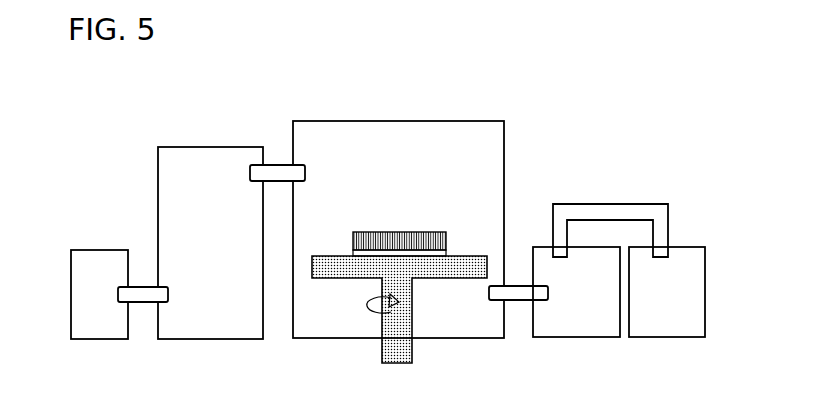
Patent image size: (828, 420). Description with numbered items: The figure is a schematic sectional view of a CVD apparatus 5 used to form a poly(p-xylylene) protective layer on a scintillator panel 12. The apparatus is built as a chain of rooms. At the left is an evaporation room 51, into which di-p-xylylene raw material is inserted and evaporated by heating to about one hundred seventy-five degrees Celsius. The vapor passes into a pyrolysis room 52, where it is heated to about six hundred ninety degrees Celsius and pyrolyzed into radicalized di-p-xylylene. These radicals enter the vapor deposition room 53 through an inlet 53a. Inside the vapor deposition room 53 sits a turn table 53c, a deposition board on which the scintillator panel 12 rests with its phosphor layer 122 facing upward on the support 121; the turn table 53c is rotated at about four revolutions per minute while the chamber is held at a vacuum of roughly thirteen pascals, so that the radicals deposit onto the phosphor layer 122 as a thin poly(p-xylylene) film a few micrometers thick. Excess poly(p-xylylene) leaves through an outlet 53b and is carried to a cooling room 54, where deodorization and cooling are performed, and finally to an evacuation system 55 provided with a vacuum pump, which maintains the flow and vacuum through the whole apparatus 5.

The CVD apparatus 5 is at (401, 63).
The scintillator panel 12 is at (430, 248).
The support 121 is at (447, 256).
The phosphor layer 122 is at (447, 238).
The evaporation room 51 is at (98, 258).
The pyrolysis room 52 is at (205, 150).
The vapor deposition room 53 is at (337, 132).
The inlet 53a is at (275, 165).
The outlet 53b is at (525, 301).
The turn table 53c is at (343, 280).
The cooling room 54 is at (574, 325).
The evacuation system 55 is at (668, 325).